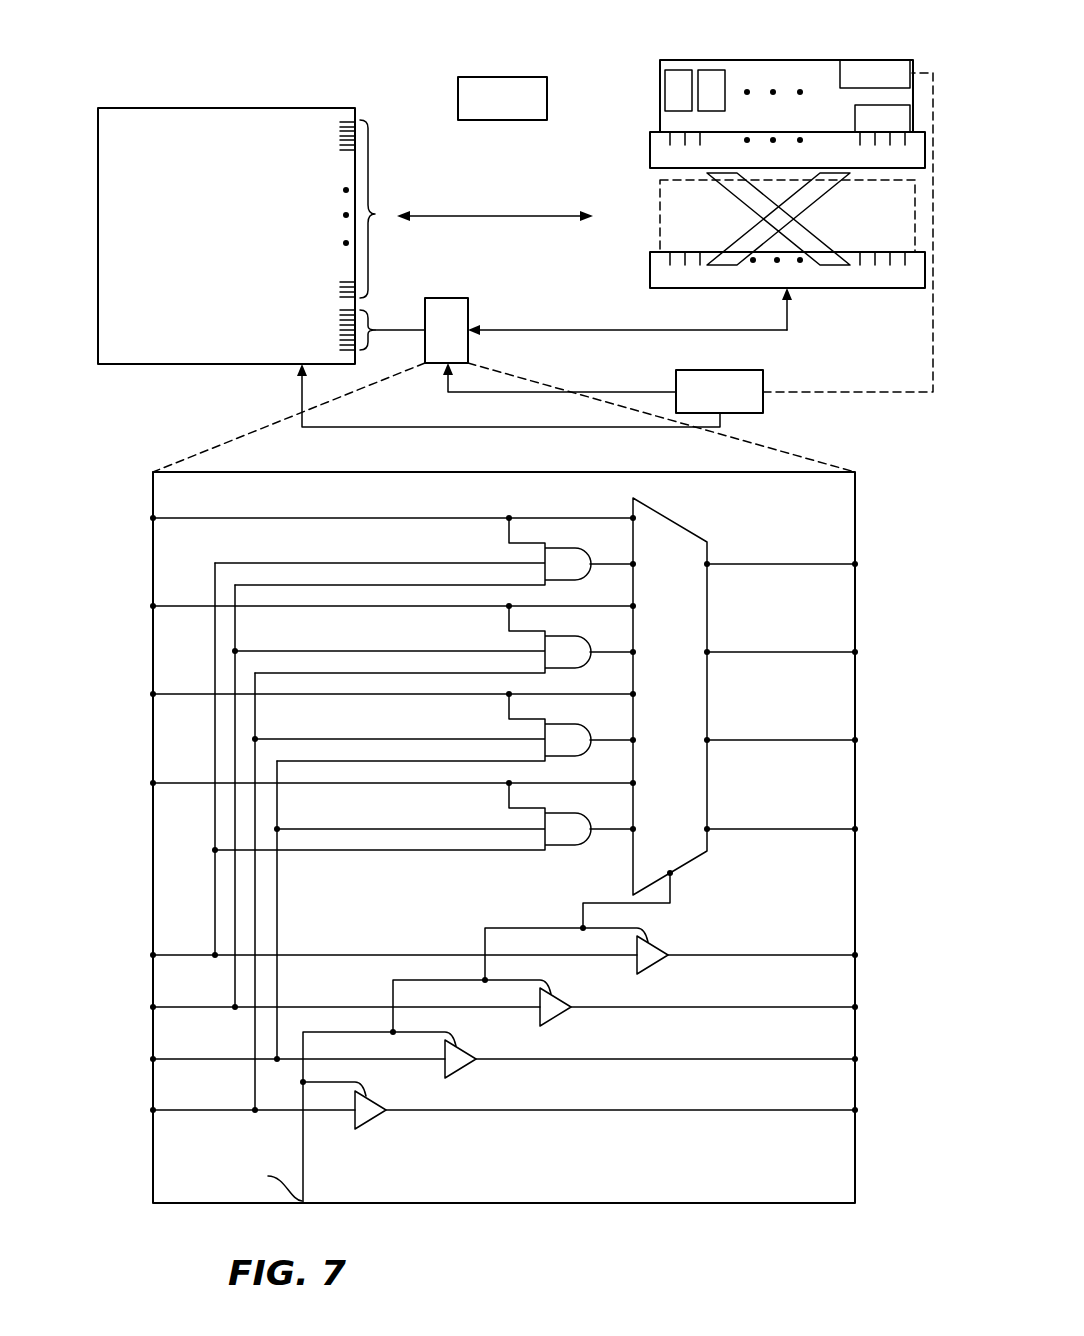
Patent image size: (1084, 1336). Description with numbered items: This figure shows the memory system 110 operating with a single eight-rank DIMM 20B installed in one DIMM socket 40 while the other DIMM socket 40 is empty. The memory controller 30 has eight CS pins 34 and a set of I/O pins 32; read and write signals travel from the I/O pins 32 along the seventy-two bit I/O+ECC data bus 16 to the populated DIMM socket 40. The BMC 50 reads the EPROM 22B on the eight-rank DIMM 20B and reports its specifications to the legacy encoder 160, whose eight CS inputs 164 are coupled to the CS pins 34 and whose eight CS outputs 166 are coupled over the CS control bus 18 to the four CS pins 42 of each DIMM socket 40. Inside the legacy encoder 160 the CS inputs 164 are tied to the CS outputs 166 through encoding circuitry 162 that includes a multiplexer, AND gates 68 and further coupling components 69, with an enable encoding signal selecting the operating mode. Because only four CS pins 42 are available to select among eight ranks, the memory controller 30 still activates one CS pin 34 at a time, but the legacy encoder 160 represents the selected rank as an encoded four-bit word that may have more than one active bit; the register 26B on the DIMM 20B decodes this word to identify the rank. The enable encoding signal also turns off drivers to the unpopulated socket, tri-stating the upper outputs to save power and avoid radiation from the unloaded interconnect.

The memory system 110 is at (262, 66).
The memory controller 30 is at (290, 108).
The I/O pins 32 is at (348, 110).
The BMC 50 is at (530, 77).
The I/O+ECC data bus 16 is at (573, 213).
The eight-rank DIMM 20B is at (660, 105).
The EPROM 22B is at (888, 60).
The register 26B is at (855, 110).
The CS pins 42 is at (933, 95).
The DIMM socket 40 is at (650, 138).
The CS control bus 18 is at (790, 322).
The CS pins 34 is at (345, 357).
The legacy encoder 160 is at (437, 298).
The CS inputs 164 is at (150, 518).
The AND gates 68 is at (565, 540).
The encoding multiplexer 162 is at (860, 545).
The CS outputs 166 is at (858, 564).
The diodes 69 is at (372, 1120).